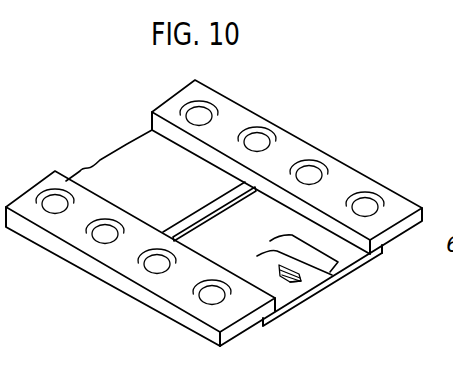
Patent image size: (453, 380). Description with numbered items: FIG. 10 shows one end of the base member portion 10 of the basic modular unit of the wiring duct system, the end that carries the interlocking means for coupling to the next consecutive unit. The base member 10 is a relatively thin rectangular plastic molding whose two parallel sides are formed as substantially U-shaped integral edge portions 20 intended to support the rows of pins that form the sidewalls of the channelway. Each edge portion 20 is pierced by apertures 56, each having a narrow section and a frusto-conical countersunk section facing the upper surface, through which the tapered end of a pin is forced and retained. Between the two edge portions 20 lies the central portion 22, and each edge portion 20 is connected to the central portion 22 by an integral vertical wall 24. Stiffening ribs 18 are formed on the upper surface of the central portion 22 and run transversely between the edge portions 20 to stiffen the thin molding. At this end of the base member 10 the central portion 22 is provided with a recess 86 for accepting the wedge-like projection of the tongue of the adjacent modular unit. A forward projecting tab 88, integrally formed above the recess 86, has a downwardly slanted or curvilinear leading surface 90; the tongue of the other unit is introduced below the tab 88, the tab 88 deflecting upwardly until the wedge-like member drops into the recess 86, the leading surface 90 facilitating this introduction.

The base member portion 10 is at (289, 85).
The edge portion 20 is at (294, 147).
The aperture 56 is at (366, 202).
The central portion 22 is at (338, 275).
The vertical wall 24 is at (356, 246).
The stiffening ribs 18 is at (206, 209).
The recess 86 is at (279, 266).
The forward projecting tab 88 is at (316, 262).
The leading surface 90 is at (311, 280).